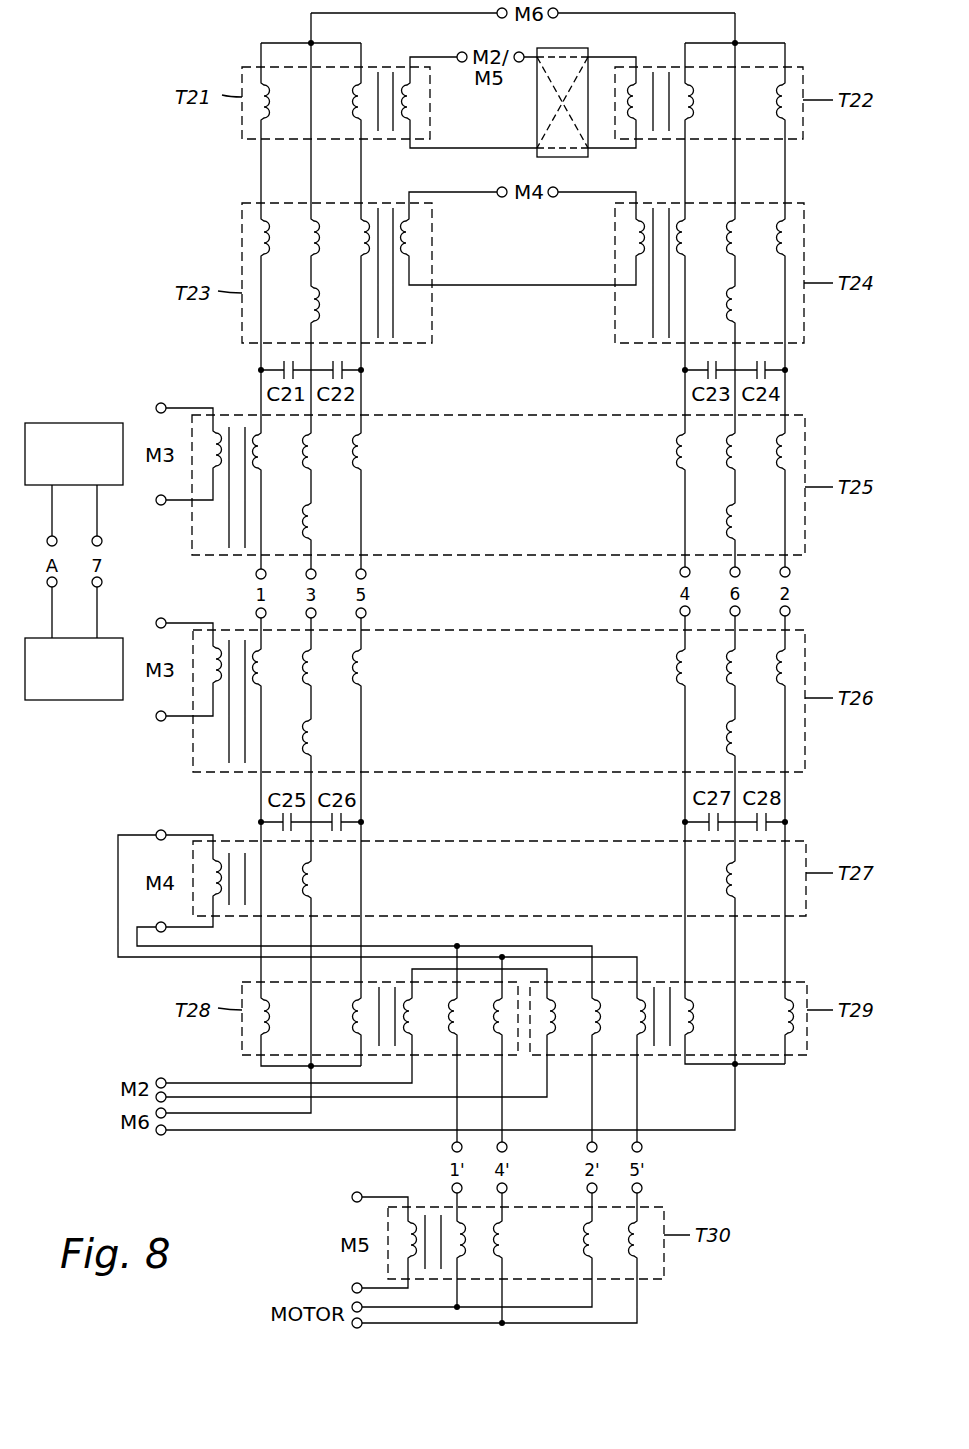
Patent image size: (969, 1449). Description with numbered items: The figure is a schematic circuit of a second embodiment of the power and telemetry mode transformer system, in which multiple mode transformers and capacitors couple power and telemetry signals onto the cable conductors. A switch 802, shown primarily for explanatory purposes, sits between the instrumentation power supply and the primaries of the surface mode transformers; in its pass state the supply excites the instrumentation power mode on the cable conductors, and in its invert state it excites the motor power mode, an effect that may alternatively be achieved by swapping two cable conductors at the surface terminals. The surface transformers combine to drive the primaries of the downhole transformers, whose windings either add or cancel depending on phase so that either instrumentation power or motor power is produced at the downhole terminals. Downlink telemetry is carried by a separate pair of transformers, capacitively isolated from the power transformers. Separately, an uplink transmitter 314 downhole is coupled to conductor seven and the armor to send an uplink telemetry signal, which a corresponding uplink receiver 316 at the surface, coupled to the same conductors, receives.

The switch 802 is at (575, 48).
The uplink receiver 316 is at (75, 422).
The uplink transmitter 314 is at (72, 700).